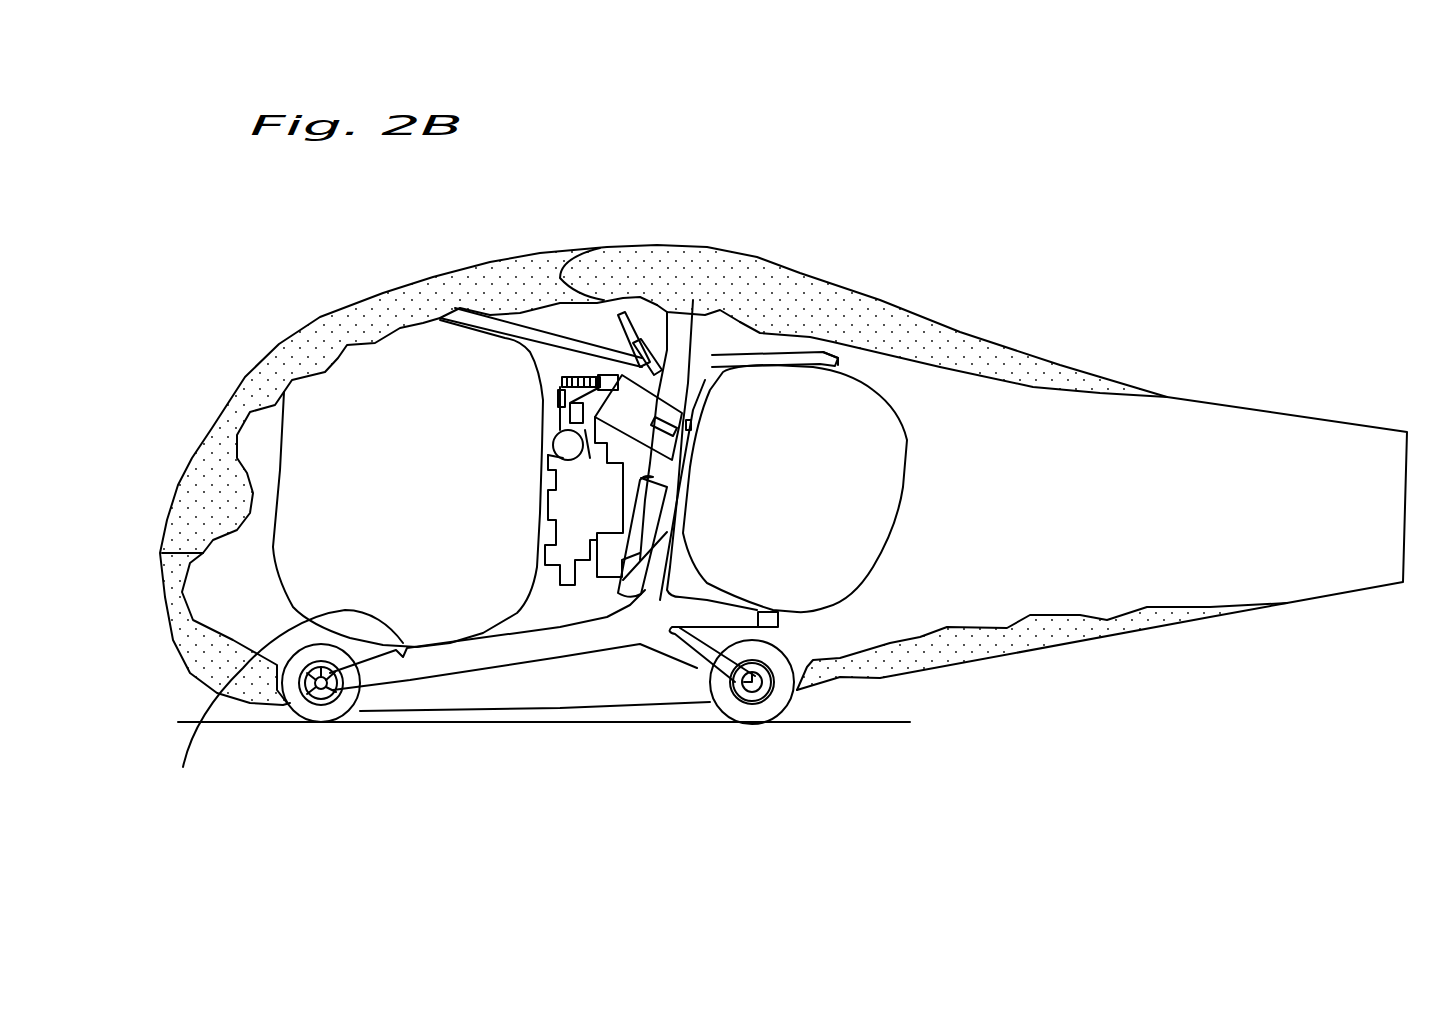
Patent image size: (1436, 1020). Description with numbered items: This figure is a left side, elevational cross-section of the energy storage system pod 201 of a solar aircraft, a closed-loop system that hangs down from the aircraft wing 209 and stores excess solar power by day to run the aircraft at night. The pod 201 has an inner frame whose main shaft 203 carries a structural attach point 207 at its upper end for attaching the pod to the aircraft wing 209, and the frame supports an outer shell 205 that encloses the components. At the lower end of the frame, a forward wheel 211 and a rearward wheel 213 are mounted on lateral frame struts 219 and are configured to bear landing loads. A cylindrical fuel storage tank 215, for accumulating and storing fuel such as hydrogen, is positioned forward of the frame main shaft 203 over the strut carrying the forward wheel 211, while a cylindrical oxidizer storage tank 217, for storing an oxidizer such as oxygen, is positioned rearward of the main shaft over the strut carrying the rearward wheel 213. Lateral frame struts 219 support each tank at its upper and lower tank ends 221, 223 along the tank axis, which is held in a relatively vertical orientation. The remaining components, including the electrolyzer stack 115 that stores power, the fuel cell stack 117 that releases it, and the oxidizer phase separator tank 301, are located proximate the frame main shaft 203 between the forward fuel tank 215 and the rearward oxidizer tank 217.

The electrolyzer stack 115 is at (583, 502).
The fuel cell stack 117 is at (650, 350).
The pod 201 is at (172, 672).
The frame main shaft 203 is at (688, 383).
The outer shell 205 is at (1217, 477).
The structural attach point 207 is at (712, 356).
The aircraft wing 209 is at (837, 310).
The forward wheel 211 is at (297, 713).
The rearward wheel 213 is at (740, 712).
The fuel storage tank 215 is at (371, 368).
The oxidizer storage tank 217 is at (840, 425).
The lateral frame struts 219 is at (495, 318).
The upper tank end 221 is at (405, 340).
The lower tank end 223 is at (1015, 752).
The oxidizer phase separator tank 301 is at (630, 548).